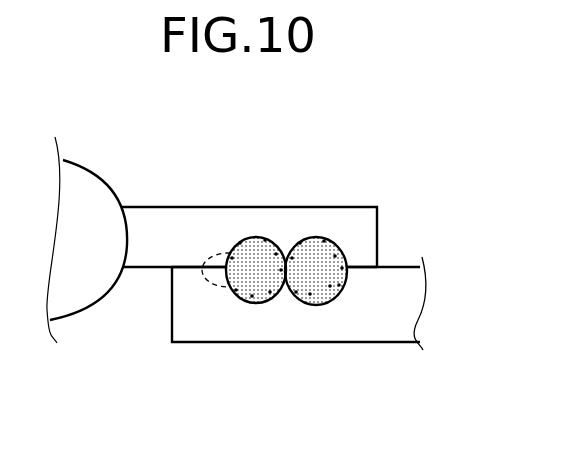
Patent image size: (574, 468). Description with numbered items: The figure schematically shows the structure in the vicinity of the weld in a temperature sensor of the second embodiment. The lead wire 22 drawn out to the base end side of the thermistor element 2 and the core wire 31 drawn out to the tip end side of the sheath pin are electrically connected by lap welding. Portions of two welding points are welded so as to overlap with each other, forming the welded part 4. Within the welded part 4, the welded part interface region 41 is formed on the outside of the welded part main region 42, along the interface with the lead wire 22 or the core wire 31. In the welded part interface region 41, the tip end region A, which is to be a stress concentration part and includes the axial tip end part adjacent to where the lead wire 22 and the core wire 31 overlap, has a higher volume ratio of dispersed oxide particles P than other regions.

The thermistor element 2 is at (119, 166).
The lead wire 22 is at (167, 220).
The core wire 31 is at (388, 307).
The welded part 4 is at (333, 283).
The welded part interface region 41 is at (271, 240).
The welded part main region 42 is at (271, 269).
The dispersed oxide particles P is at (260, 305).
The tip end region A is at (210, 283).